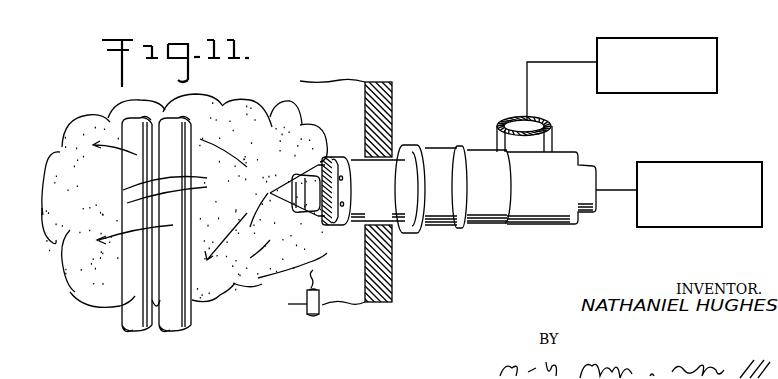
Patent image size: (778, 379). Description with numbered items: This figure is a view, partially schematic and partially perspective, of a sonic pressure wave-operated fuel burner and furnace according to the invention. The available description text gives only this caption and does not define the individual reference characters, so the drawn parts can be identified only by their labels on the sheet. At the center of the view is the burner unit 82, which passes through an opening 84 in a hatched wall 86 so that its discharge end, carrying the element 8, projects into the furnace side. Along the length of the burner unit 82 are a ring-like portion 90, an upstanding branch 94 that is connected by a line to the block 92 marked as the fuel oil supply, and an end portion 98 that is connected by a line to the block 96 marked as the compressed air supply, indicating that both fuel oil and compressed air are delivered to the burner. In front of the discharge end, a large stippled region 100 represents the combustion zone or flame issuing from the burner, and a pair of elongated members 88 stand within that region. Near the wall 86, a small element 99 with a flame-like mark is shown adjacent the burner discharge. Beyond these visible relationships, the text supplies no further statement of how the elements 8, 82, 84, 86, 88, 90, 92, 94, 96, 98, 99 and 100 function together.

The nozzle flange 8 is at (345, 240).
The burner nozzle body 82 is at (453, 179).
The wall opening 84 is at (381, 246).
The wall 86 is at (384, 80).
The tubes 88 is at (140, 328).
The mounting ring 90 is at (425, 145).
The fuel oil supply 92 is at (717, 38).
The fuel inlet pipe 94 is at (553, 132).
The compressed air supply 96 is at (703, 232).
The air inlet end 98 is at (578, 218).
The igniter candle 99 is at (304, 286).
The flame cloud 100 is at (227, 283).